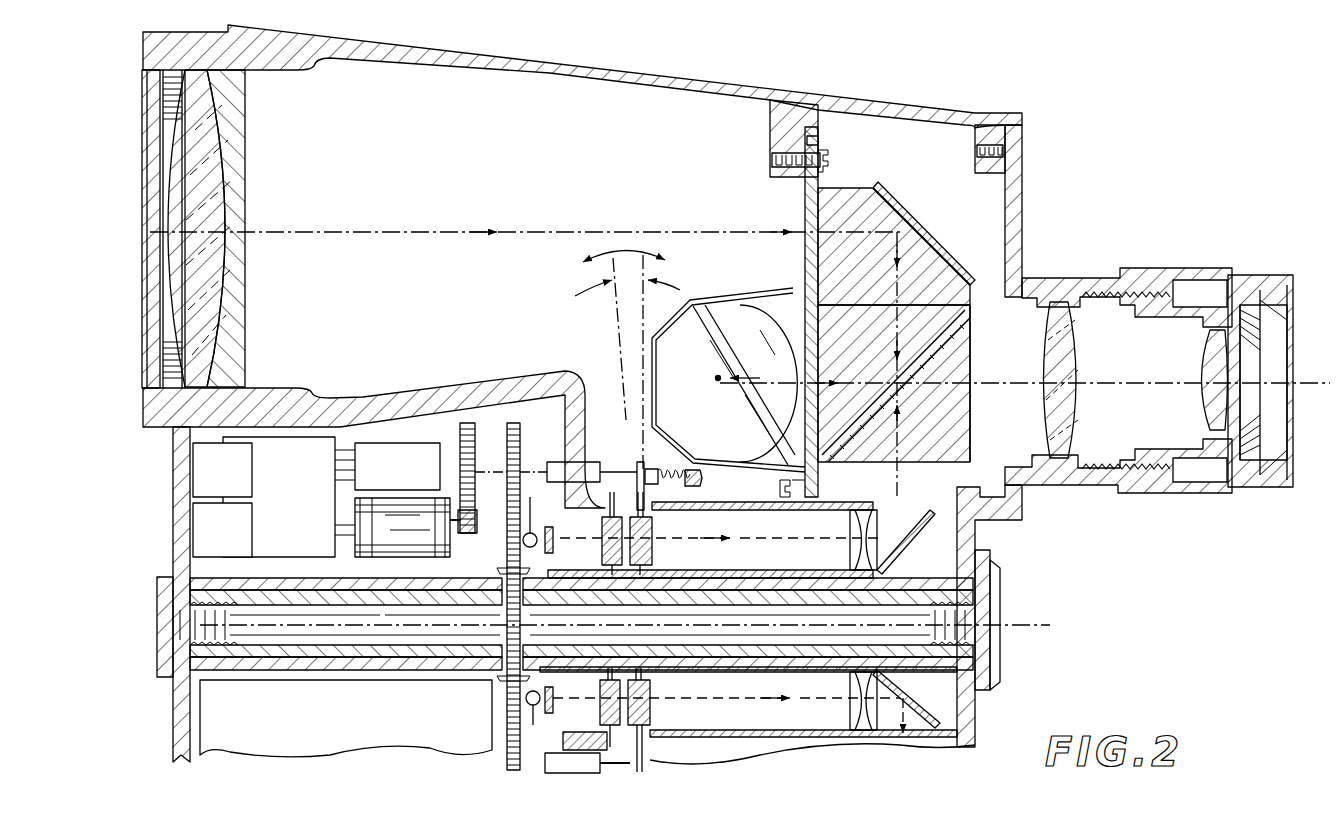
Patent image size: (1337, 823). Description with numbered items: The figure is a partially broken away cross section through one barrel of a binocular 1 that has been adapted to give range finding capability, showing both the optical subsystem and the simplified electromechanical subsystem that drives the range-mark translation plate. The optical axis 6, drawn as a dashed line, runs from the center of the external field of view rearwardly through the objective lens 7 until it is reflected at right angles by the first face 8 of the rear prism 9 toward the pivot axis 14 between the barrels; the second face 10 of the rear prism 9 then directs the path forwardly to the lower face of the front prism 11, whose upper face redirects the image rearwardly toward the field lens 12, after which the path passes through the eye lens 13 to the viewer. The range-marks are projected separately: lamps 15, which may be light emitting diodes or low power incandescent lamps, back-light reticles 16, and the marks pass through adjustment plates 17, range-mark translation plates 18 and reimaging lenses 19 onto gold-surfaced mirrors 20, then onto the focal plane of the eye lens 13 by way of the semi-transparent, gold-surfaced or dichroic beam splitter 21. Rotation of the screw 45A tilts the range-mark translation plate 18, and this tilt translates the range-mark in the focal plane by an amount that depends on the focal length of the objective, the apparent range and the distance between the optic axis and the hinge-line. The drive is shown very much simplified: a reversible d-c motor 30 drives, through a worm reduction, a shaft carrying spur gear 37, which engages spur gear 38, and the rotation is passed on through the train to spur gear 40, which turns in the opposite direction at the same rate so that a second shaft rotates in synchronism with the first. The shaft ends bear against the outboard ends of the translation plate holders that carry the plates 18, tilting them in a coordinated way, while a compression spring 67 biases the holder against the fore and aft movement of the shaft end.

The housing 1 is at (932, 90).
The optical axis 6 is at (457, 224).
The objective lens 7 is at (262, 182).
The first face of rear prism 8 is at (945, 252).
The rear prism 9 is at (950, 246).
The second face of rear prism 10 is at (946, 332).
The front prism 11 is at (735, 286).
The field lens 12 is at (1076, 350).
The eye lens 13 is at (1200, 338).
The pivot axis 14 is at (1036, 623).
The lamps 15 is at (531, 522).
The reticles 16 is at (553, 537).
The adjustment plates 17 is at (602, 548).
The range-mark translation plates 18 is at (652, 548).
The reimaging lenses 19 is at (850, 530).
The gold-surfaced mirrors 20 is at (906, 540).
The beam splitter 21 is at (972, 340).
The reversible d-c motor 30 is at (450, 545).
The spur gear 37 is at (520, 435).
The spur gear 38 is at (506, 548).
The spur gear 40 is at (497, 752).
The screw 45A is at (637, 463).
The compression spring 67 is at (673, 489).